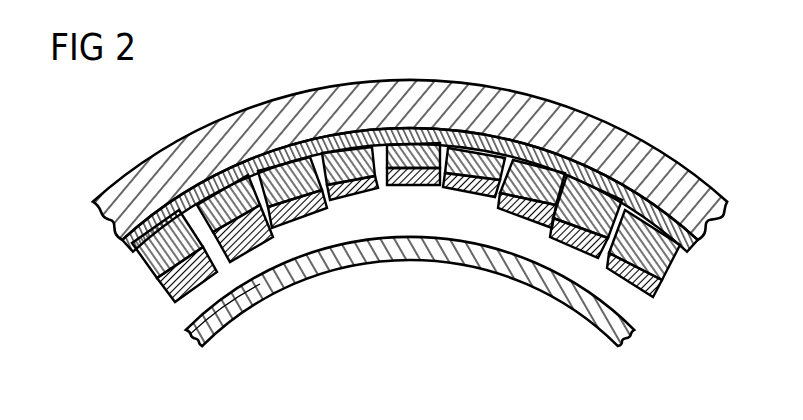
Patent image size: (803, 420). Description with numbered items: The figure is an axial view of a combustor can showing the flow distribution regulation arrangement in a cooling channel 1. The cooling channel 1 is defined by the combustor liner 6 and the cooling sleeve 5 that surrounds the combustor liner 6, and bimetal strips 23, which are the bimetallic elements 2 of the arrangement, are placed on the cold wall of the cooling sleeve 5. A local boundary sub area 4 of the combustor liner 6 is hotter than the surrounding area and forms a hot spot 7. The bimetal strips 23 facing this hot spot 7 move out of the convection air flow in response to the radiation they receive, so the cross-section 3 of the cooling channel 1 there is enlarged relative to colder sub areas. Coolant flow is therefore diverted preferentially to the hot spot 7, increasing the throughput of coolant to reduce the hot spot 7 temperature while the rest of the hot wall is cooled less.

The cooling channel 1 is at (192, 307).
The bimetallic element 2 is at (355, 251).
The bimetal strip 23 is at (223, 224).
The cross-section of the cooling channel 3 is at (412, 188).
The local boundary sub area 4 is at (410, 291).
The cooling sleeve 5 is at (411, 108).
The combustor liner 6 is at (212, 328).
The hot spot 7 is at (455, 263).